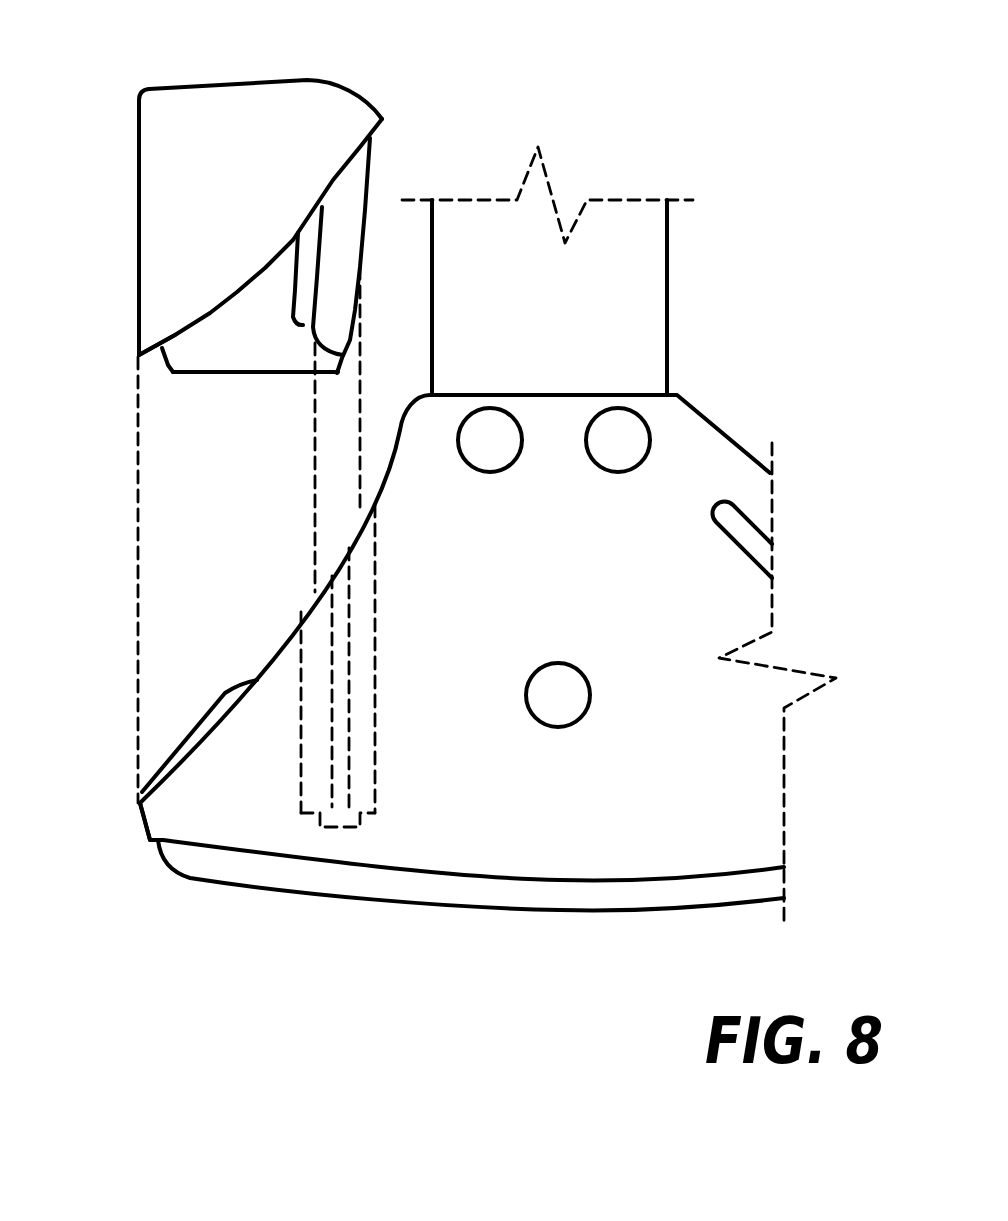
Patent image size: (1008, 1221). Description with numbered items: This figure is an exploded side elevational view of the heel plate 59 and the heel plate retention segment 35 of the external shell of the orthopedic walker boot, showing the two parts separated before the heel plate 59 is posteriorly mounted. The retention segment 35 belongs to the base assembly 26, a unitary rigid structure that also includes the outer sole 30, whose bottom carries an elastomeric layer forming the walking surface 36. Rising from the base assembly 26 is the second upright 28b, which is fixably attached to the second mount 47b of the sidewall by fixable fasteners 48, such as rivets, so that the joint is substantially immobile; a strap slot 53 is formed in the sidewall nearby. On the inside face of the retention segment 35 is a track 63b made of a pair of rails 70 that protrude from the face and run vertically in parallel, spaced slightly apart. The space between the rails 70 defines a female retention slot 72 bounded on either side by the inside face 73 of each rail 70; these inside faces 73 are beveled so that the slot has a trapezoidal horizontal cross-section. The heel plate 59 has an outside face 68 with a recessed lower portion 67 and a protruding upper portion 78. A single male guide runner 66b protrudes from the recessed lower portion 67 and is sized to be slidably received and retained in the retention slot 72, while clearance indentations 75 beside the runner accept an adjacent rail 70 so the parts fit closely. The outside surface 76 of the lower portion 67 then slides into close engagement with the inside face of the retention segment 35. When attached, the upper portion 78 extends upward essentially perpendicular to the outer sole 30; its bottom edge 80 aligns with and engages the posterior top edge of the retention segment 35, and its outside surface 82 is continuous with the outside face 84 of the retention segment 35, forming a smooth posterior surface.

The heel plate 59 is at (235, 113).
The outside surface 82 is at (140, 113).
The protruding upper portion 78 is at (150, 170).
The outside face 68 is at (138, 233).
The recessed lower portion 67 is at (177, 360).
The bottom edge 80 is at (203, 337).
The outside surface 76 is at (232, 345).
The clearance indentations 75 is at (294, 325).
The guide runner 66b is at (352, 205).
The second upright 28b is at (625, 335).
The second mount 47b is at (578, 589).
The fixable fasteners 48 is at (515, 462).
The strap slot 53 is at (753, 540).
The base assembly 26 is at (661, 809).
The heel plate retention segment 35 is at (175, 753).
The outside face 84 is at (138, 823).
The outer sole 30 is at (612, 884).
The walking surface 36 is at (705, 886).
The rails 70 is at (310, 718).
The retention slot 72 is at (333, 737).
The inside face 73 is at (333, 790).
The track 63b is at (377, 793).